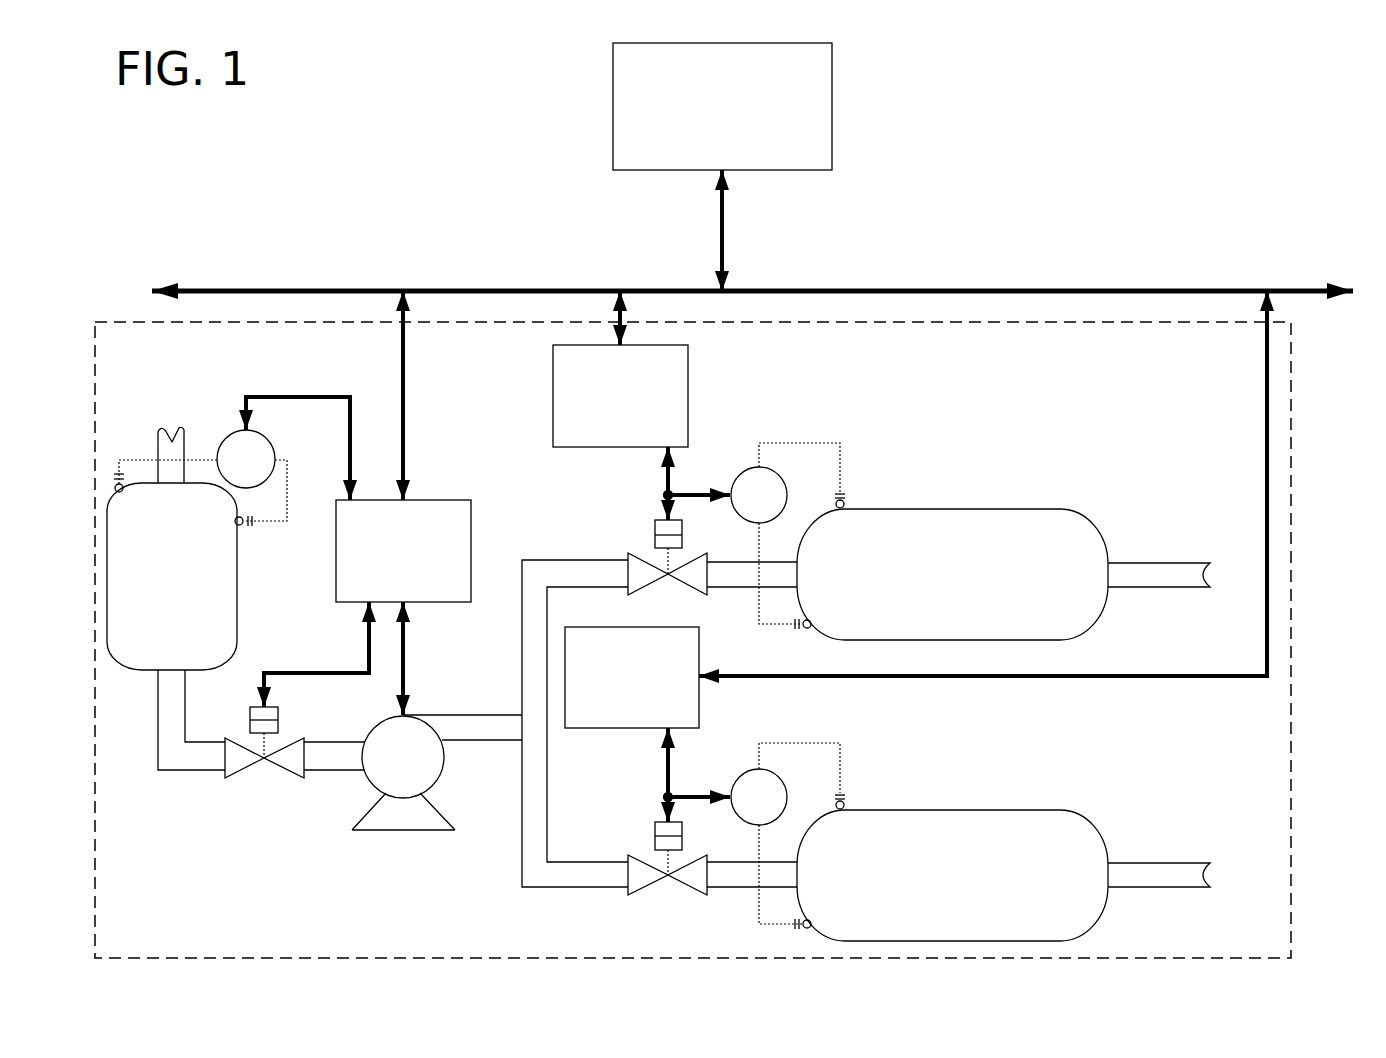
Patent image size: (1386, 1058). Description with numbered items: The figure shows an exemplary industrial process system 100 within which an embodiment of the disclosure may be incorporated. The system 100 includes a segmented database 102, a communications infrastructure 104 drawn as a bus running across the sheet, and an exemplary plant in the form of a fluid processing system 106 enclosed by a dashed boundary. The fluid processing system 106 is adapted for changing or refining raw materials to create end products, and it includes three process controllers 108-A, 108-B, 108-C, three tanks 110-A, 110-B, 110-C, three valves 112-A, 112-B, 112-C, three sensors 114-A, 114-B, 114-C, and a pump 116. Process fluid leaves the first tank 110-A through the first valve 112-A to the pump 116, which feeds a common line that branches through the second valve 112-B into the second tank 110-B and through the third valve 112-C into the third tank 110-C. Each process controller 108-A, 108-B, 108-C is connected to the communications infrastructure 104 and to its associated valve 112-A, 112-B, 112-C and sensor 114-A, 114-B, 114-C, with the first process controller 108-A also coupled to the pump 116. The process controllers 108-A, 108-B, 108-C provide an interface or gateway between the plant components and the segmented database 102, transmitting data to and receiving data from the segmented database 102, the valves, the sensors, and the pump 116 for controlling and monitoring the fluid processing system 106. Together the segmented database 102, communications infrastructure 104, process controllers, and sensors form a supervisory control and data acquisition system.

The system 100 is at (480, 92).
The segmented database 102 is at (722, 167).
The communications infrastructure 104 is at (245, 291).
The fluid processing system 106 is at (1292, 404).
The process controller 108-A is at (472, 508).
The process controller 108-B is at (690, 388).
The process controller 108-C is at (611, 728).
The tank 110-A is at (237, 600).
The tank 110-B is at (973, 509).
The tank 110-C is at (973, 810).
The valve 112-A is at (279, 722).
The valve 112-B is at (655, 535).
The valve 112-C is at (655, 837).
The sensor 114-A is at (232, 443).
The sensor 114-B is at (742, 475).
The sensor 114-C is at (742, 778).
The pump 116 is at (402, 832).